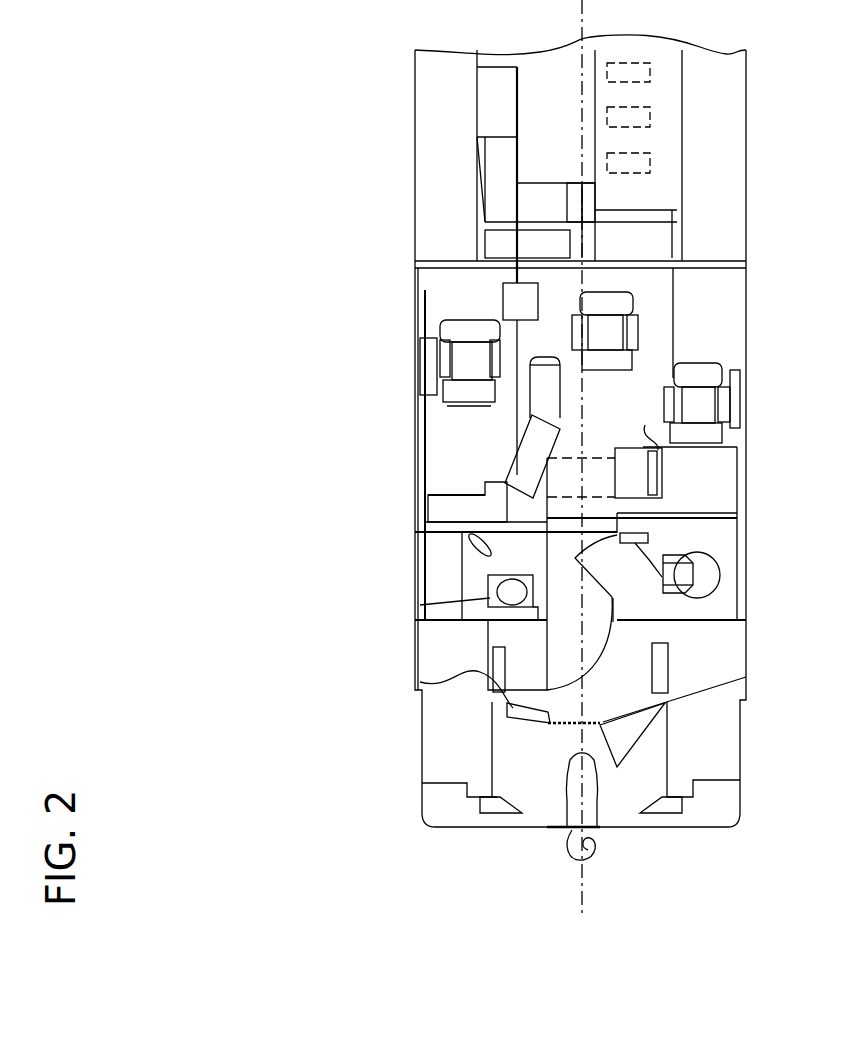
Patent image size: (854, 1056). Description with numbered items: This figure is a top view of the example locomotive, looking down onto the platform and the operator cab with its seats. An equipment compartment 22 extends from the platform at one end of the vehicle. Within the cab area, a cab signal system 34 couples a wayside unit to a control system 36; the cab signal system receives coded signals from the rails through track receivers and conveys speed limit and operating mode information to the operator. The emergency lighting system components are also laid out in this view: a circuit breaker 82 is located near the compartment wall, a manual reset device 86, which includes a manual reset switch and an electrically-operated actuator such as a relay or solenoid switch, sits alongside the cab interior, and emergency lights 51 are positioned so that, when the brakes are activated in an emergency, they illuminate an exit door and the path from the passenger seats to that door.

The equipment compartment 22 is at (560, 202).
The cab signal system 34 is at (675, 369).
The control system 36 is at (638, 473).
The emergency light 51 is at (707, 558).
The circuit breaker 82 is at (505, 300).
The manual reset device 86 is at (513, 455).